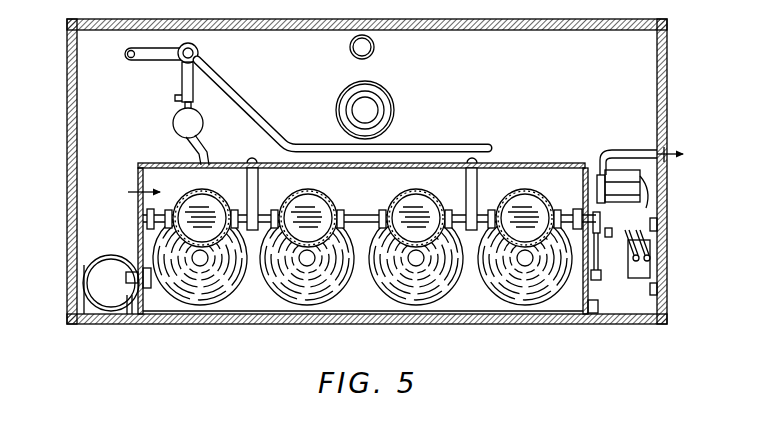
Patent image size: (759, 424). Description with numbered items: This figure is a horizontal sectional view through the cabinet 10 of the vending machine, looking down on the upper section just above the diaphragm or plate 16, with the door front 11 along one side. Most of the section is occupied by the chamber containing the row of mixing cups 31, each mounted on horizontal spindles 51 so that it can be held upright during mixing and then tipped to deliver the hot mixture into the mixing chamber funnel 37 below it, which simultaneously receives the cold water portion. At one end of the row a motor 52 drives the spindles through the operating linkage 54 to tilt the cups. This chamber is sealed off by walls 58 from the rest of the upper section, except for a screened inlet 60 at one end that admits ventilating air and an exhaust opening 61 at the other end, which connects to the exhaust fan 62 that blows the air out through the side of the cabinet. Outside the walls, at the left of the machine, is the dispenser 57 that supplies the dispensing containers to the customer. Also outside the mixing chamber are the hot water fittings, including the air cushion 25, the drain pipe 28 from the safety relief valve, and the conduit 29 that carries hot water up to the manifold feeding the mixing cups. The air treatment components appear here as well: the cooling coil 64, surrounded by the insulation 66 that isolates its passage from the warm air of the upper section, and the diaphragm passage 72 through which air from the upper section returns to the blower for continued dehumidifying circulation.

The cabinet 10 is at (68, 172).
The door front 11 is at (240, 327).
The diaphragm or plate 16 is at (641, 75).
The air cushion 25 is at (199, 121).
The drain pipe 28 is at (249, 109).
The conduit 29 is at (162, 60).
The mixing cup 31 is at (236, 181).
The mixing chamber funnel 37 is at (237, 274).
The horizontal spindles 51 is at (374, 216).
The motor 52 is at (643, 279).
The operating linkage 54 is at (606, 267).
The dispenser 57 is at (123, 235).
The walls 58 is at (556, 163).
The screened inlet 60 is at (140, 177).
The exhaust opening 61 is at (596, 184).
The exhaust fan 62 is at (598, 162).
The cooling coil 64 is at (373, 96).
The insulation 66 is at (394, 119).
The diaphragm passage 72 is at (352, 50).